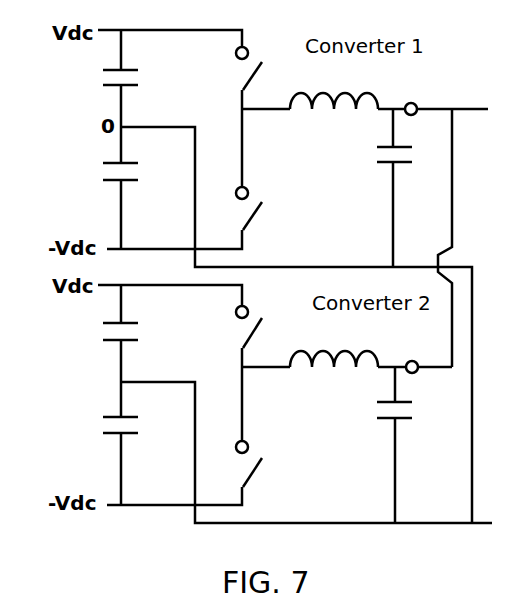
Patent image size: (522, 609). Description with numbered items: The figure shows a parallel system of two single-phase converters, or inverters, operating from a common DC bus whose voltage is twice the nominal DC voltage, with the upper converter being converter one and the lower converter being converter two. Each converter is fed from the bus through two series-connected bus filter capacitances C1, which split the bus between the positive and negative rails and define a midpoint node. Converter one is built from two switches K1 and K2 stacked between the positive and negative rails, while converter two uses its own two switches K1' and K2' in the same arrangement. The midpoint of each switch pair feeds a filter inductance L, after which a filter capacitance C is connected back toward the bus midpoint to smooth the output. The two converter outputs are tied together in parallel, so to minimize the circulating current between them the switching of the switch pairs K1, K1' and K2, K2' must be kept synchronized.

The filter capacitance of the bus C1 is at (105, 253).
The switch of converter 1 K1 is at (232, 68).
The switch of converter 1 K2 is at (232, 208).
The switch of converter 2 K1' is at (232, 328).
The switch of converter 2 K2' is at (232, 464).
The filter inductance of the converter L is at (334, 216).
The filter capacitance of the converter C is at (404, 316).